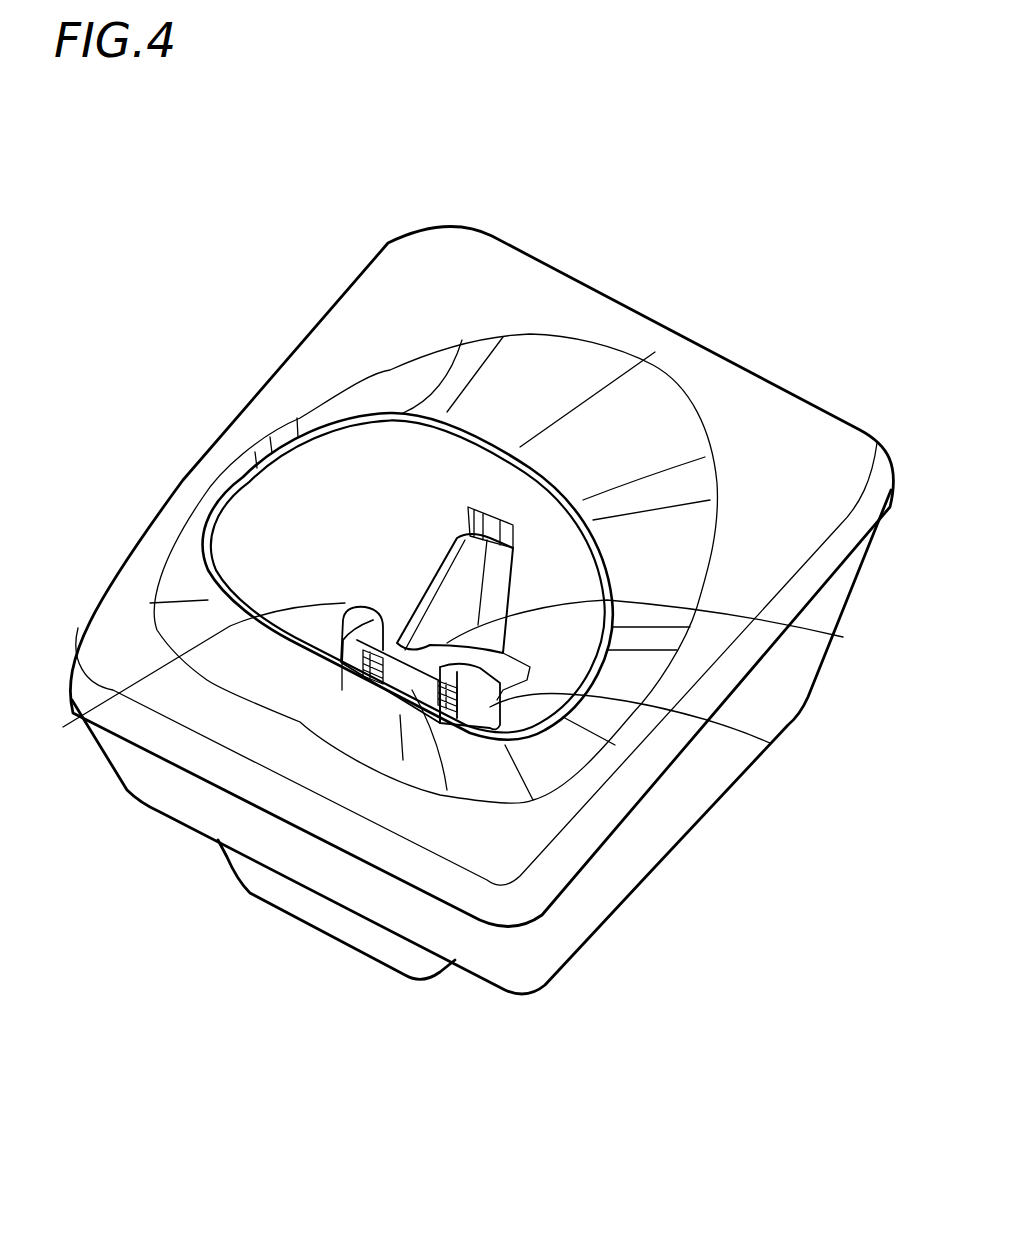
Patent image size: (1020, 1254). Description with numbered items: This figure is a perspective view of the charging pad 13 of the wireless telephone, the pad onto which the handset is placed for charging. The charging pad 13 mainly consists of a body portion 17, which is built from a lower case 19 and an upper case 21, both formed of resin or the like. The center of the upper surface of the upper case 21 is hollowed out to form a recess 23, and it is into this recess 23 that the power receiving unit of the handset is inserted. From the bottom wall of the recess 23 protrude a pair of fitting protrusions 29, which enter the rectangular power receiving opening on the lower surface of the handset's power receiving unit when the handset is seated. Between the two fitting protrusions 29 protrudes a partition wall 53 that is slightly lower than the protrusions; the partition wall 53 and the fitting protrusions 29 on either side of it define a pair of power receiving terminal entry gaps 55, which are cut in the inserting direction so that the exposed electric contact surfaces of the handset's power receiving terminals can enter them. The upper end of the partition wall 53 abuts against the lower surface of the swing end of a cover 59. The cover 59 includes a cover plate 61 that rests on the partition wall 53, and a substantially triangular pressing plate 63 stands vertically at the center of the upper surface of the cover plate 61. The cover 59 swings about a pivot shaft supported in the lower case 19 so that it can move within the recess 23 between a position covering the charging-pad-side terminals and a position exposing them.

The charging pad 13 is at (481, 623).
The body portion 17 is at (481, 789).
The lower case 19 is at (500, 957).
The upper case 21 is at (483, 903).
The recess 23 is at (297, 527).
The fitting protrusions 29 is at (800, 748).
The partition wall 53 is at (342, 690).
The power receiving terminal entry gaps 55 is at (407, 687).
The cover 59 is at (450, 542).
The cover plate 61 is at (843, 637).
The pressing plate 63 is at (477, 560).